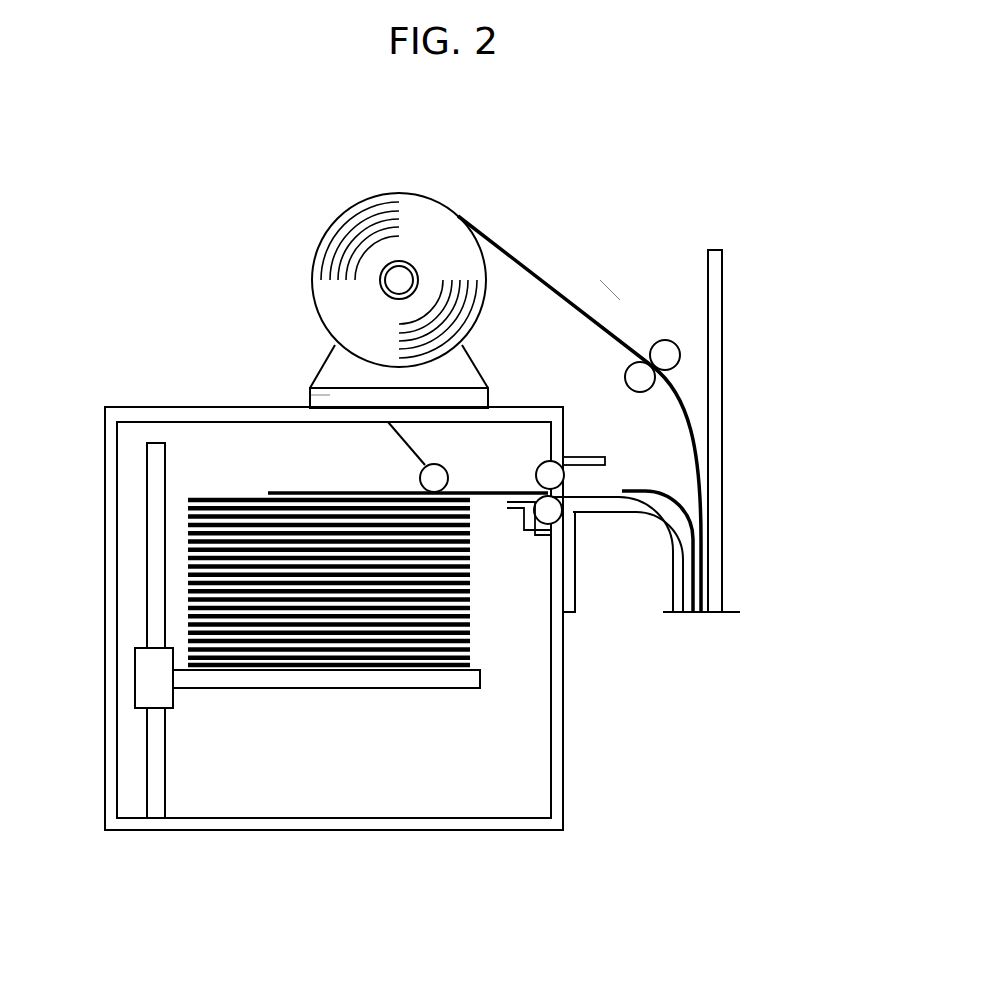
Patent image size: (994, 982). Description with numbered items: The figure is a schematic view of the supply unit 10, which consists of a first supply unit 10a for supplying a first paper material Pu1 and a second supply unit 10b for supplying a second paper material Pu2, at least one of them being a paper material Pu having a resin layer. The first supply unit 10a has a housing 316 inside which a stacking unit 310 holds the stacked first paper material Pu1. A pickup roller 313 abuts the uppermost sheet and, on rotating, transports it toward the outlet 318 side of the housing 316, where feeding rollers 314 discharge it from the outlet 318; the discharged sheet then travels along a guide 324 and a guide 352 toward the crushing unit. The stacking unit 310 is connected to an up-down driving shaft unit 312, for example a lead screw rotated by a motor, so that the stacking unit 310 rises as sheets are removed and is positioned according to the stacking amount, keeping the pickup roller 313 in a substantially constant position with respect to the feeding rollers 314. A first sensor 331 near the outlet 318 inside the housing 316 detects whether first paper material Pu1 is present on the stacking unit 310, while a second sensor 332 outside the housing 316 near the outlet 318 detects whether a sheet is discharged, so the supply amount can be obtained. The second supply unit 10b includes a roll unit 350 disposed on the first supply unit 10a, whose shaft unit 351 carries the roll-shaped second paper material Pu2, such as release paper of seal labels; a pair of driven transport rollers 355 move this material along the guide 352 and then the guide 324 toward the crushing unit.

The supply unit 10 is at (247, 273).
The first supply unit 10a is at (95, 491).
The second supply unit 10b is at (565, 241).
The stacking unit 310 is at (467, 681).
The up-down driving shaft unit 312 is at (153, 556).
The pickup roller 313 is at (442, 466).
The feeding rollers 314 is at (546, 462).
The housing 316 is at (108, 598).
The outlet 318 is at (562, 491).
The guide 324 is at (653, 517).
The first sensor 331 is at (512, 505).
The second sensor 332 is at (582, 458).
The roll unit 350 is at (319, 349).
The shaft unit 351 is at (386, 283).
The guide 352 is at (718, 386).
The transport rollers 355 is at (664, 342).
The first paper material Pu1 is at (216, 498).
The second paper material Pu2 is at (404, 193).
The paper material Pu is at (703, 442).